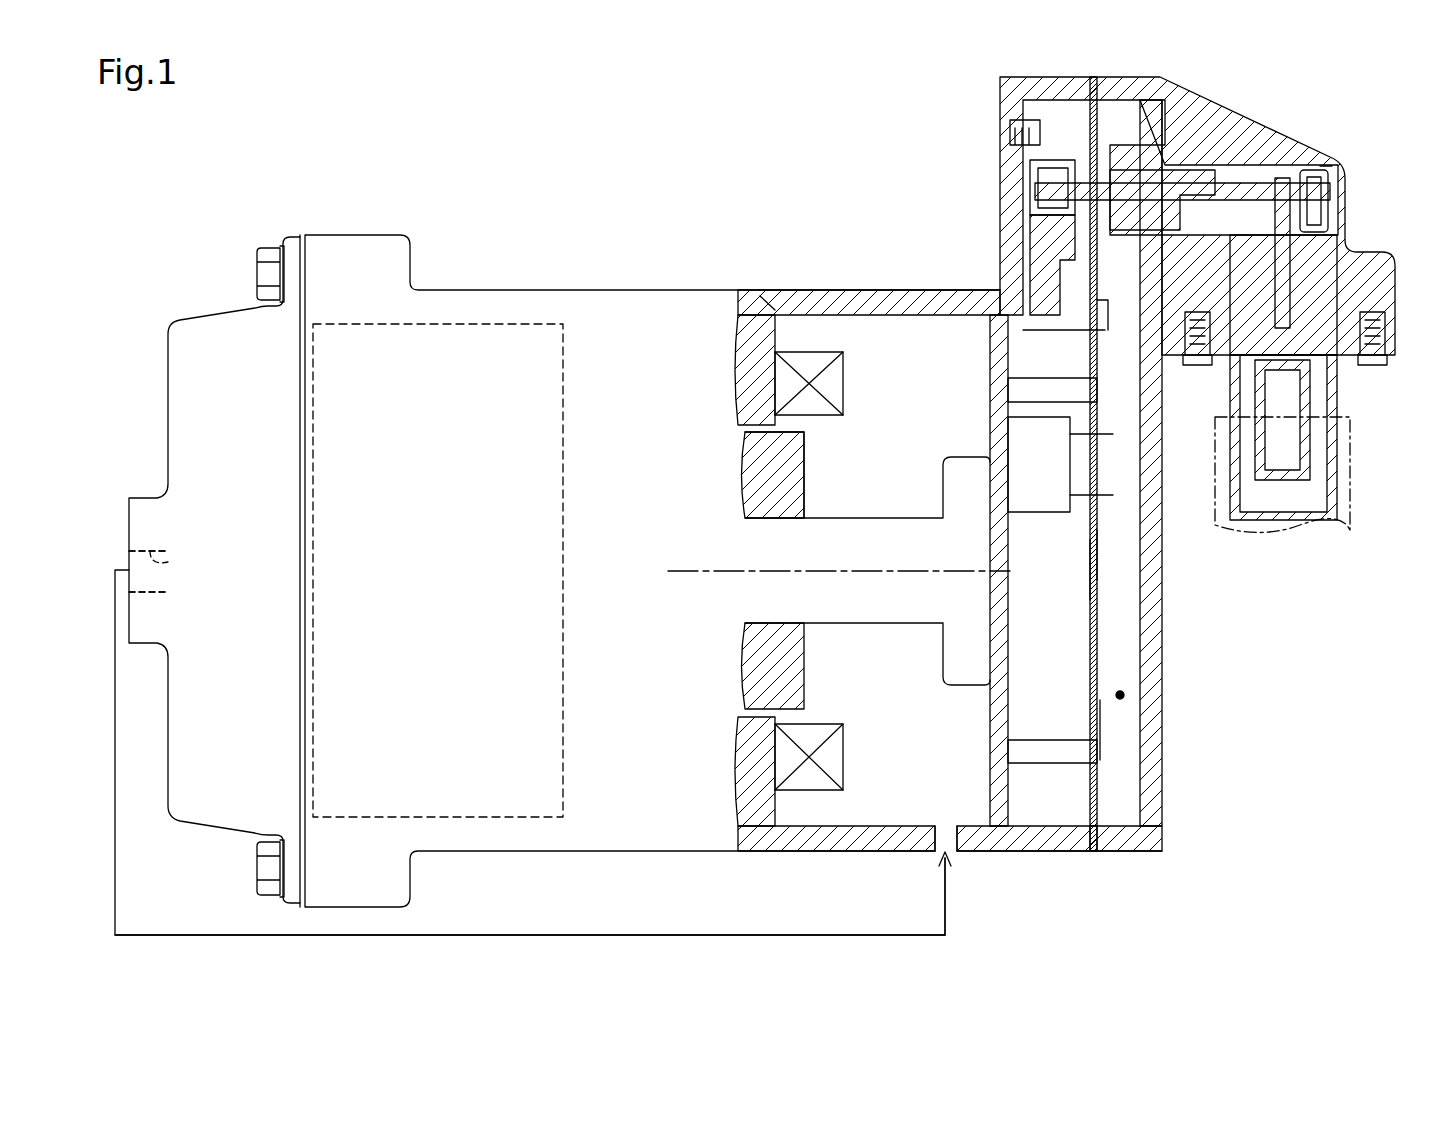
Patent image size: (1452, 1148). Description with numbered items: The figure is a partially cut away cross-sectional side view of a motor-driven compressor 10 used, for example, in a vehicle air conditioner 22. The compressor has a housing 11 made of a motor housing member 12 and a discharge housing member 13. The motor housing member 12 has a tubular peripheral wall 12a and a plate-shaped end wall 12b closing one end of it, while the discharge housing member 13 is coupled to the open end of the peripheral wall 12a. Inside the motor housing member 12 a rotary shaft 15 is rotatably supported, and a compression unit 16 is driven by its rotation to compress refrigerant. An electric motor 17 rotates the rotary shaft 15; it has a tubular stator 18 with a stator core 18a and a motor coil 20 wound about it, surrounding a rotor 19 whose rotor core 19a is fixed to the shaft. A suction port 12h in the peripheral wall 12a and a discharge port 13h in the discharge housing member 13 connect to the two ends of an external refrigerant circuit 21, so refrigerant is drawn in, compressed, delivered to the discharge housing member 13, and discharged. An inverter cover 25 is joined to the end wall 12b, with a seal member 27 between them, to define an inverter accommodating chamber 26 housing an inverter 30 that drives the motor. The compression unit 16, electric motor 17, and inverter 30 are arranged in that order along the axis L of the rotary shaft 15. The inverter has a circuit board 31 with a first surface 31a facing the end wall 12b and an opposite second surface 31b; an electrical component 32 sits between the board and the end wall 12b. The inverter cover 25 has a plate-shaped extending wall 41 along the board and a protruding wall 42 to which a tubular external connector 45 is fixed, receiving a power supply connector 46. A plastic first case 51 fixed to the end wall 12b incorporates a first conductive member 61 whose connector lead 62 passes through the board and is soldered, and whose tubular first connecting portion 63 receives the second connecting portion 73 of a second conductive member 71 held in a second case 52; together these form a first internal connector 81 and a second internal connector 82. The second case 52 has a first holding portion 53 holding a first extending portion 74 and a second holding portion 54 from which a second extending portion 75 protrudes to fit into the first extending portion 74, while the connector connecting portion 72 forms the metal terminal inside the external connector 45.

The motor-driven compressor 10 is at (634, 575).
The housing 11 is at (568, 290).
The motor housing member 12 is at (678, 290).
The peripheral wall 12a is at (820, 851).
The end wall 12b is at (990, 432).
The suction port 12h is at (950, 826).
The discharge housing member 13 is at (168, 376).
The discharge port 13h is at (178, 562).
The rotary shaft 15 is at (835, 623).
The compression unit 16 is at (470, 324).
The electric motor 17 is at (782, 302).
The stator 18 is at (724, 570).
The stator core 18a is at (740, 368).
The rotor 19 is at (745, 660).
The rotor core 19a is at (804, 480).
The motor coil 20 is at (790, 390).
The external refrigerant circuit 21 is at (945, 895).
The vehicle air conditioner 22 is at (996, 940).
The inverter cover 25 is at (1150, 852).
The inverter accommodating chamber 26 is at (1124, 695).
The seal member 27 is at (1093, 852).
The inverter 30 is at (1131, 740).
The circuit board 31 is at (1103, 595).
The first surface 31a is at (1097, 565).
The second surface 31b is at (1105, 555).
The electrical component 32 is at (1040, 512).
The extending wall 41 is at (1162, 635).
The protruding wall 42 is at (1348, 178).
The external connector 45 is at (1330, 530).
The power supply connector 46 is at (1352, 495).
The first case 51 is at (1035, 330).
The second case 52 is at (1311, 159).
The first holding portion 53 is at (1322, 190).
The second holding portion 54 is at (1310, 280).
The first conductive member 61 is at (1030, 245).
The connector lead 62 is at (1100, 315).
The first connecting portion 63 is at (1033, 190).
The second conductive member 71 is at (1252, 170).
The connector connecting portion 72 is at (1300, 430).
The second connecting portion 73 is at (1050, 175).
The first extending portion 74 is at (1185, 183).
The second extending portion 75 is at (1340, 340).
The first internal connector 81 is at (1009, 152).
The second internal connector 82 is at (1333, 156).
The axis L is at (690, 568).